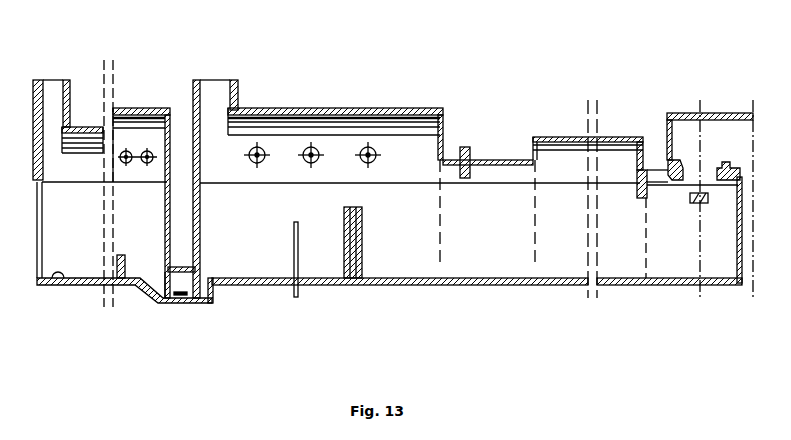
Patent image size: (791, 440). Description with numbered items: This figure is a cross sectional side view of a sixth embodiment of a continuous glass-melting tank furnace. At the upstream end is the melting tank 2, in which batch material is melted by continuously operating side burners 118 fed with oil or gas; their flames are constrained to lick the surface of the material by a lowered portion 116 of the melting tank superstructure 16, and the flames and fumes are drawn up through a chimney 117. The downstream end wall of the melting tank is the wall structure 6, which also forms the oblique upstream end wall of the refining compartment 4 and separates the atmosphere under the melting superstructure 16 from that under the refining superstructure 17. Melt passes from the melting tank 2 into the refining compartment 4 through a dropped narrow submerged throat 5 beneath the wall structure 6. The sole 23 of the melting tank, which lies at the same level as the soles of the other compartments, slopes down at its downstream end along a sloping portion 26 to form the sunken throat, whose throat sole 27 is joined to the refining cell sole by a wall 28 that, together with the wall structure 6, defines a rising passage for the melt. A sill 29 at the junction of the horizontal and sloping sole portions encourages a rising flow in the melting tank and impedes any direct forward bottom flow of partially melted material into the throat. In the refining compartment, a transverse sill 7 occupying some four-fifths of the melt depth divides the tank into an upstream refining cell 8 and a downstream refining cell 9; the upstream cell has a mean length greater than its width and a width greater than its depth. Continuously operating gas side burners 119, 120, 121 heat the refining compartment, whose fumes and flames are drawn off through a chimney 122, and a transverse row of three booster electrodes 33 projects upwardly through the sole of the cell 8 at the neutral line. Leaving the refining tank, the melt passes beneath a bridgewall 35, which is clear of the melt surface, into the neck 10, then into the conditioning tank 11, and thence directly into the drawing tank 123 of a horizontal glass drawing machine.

The melting tank 2 is at (74, 238).
The refining compartment 4 is at (446, 104).
The submerged throat 5 is at (180, 286).
The wall structure 6 is at (194, 118).
The transverse sill 7 is at (362, 233).
The upstream refining cell 8 is at (257, 238).
The downstream refining cell 9 is at (408, 238).
The neck 10 is at (497, 238).
The conditioning tank 11 is at (575, 238).
The melting compartment superstructure 16 is at (122, 107).
The refining compartment superstructure 17 is at (312, 108).
The melting tank sole 23 is at (63, 272).
The sloping portion of the sole 26 is at (148, 293).
The throat sole 27 is at (199, 303).
The wall 28 is at (215, 293).
The sill 29 is at (121, 259).
The booster electrodes 33 is at (298, 300).
The bridgewall 35 is at (468, 147).
The lowered portion of the melting tank superstructure 116 is at (82, 127).
The chimney 117 is at (50, 92).
The side burners 118 is at (147, 163).
The side burner 119 is at (254, 158).
The side burner 120 is at (307, 164).
The side burner 121 is at (373, 164).
The chimney 122 is at (222, 88).
The drawing tank 123 is at (722, 286).